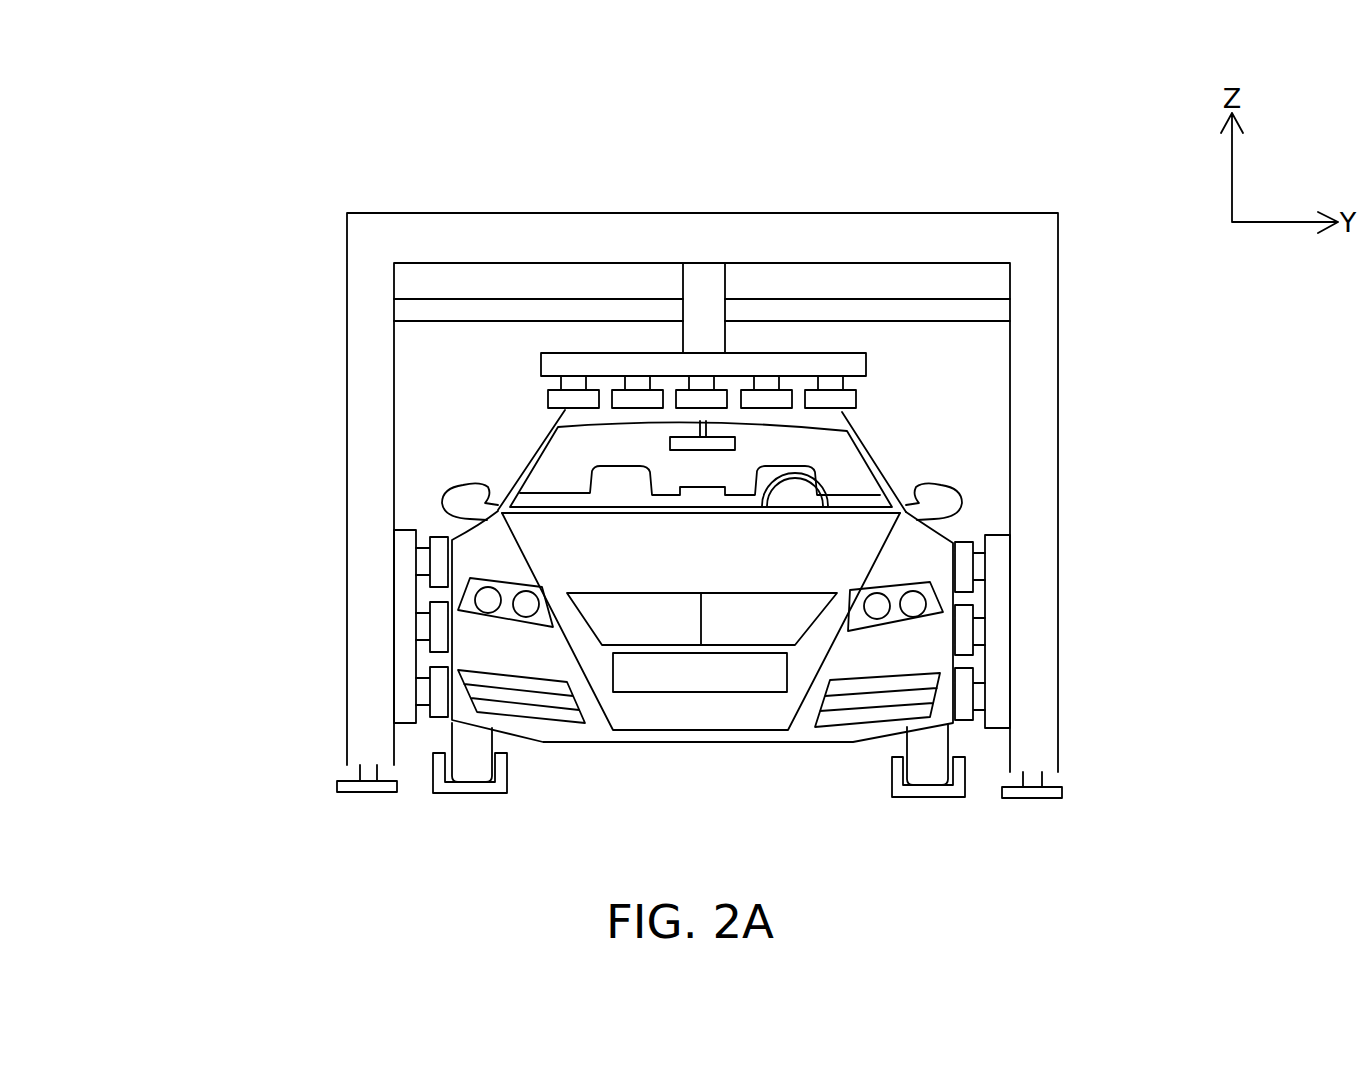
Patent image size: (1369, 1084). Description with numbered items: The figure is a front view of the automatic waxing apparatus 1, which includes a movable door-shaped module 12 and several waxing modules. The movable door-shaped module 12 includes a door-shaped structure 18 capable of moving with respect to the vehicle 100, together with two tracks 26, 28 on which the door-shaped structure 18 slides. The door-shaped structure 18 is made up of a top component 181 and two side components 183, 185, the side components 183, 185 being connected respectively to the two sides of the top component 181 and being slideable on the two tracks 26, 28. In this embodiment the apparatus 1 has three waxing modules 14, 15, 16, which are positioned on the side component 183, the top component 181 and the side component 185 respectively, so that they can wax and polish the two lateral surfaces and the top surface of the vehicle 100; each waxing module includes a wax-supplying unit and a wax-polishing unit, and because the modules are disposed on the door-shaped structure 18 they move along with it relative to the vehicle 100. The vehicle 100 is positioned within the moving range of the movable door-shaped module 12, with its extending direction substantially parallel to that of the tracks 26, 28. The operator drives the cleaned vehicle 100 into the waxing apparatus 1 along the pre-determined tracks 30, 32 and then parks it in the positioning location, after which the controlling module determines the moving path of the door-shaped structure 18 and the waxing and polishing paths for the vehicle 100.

The automatic waxing apparatus 1 is at (49, 101).
The movable door-shaped module 12 is at (1108, 576).
The waxing module 14 is at (402, 617).
The waxing module 15 is at (548, 358).
The waxing module 16 is at (1000, 622).
The door-shaped structure 18 is at (813, 160).
The top component 181 is at (706, 223).
The side component 183 is at (368, 283).
The side component 185 is at (1047, 290).
The track 26 is at (365, 794).
The track 28 is at (1062, 793).
The pre-determined track 30 is at (470, 795).
The pre-determined track 32 is at (925, 800).
The vehicle 100 is at (877, 465).